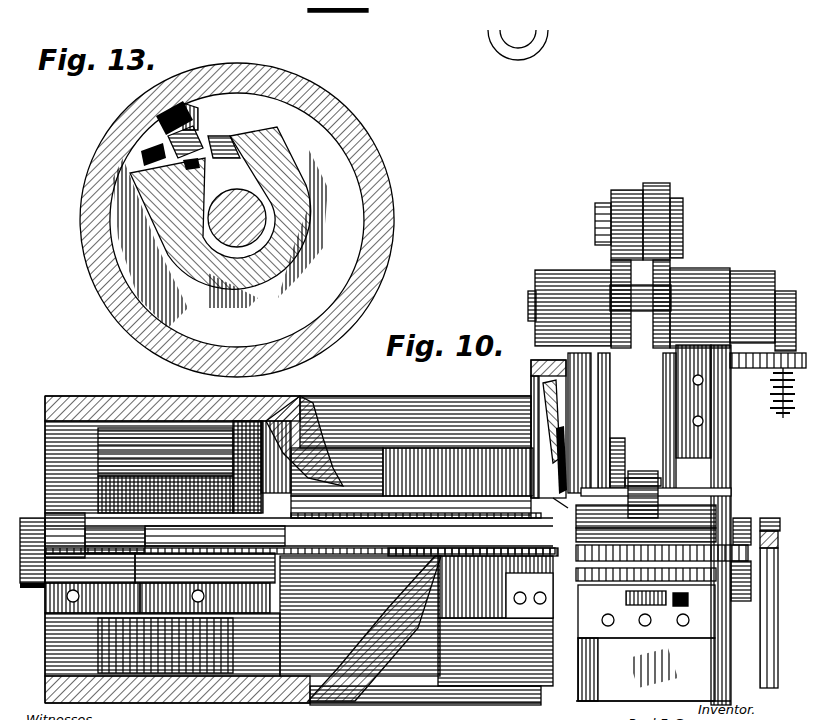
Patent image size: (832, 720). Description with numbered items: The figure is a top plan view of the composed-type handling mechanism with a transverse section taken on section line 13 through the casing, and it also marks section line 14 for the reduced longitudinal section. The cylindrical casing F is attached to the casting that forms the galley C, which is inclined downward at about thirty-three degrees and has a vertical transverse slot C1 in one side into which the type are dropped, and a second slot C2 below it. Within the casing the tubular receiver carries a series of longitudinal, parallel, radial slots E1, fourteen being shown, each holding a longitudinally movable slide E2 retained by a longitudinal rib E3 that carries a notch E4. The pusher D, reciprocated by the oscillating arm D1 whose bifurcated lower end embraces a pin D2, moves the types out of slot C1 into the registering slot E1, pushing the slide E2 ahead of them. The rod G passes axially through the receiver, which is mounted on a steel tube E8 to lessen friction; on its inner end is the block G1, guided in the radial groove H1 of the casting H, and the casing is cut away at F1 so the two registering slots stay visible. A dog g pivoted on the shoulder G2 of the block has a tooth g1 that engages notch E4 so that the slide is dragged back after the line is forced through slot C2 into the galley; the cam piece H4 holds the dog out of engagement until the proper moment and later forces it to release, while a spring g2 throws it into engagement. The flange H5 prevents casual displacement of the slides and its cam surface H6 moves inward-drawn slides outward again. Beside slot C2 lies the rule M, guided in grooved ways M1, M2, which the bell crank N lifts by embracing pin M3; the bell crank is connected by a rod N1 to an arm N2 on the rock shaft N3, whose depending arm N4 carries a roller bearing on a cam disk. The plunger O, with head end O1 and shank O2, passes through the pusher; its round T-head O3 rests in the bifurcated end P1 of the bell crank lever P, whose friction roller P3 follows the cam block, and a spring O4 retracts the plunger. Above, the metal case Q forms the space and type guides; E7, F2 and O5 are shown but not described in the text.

In FIG. 13, the cylindrical casing F is at (375, 200).
In FIG. 10, the cylindrical casing F is at (293, 540).
In FIG. 13, the casting H is at (224, 238).
In FIG. 10, the casting H is at (153, 467).
In FIG. 13, the radial groove H1 is at (265, 152).
In FIG. 10, the radial groove H1 is at (180, 490).
In FIG. 13, the rod G is at (237, 210).
In FIG. 13, the block G1 is at (225, 140).
In FIG. 10, the block G1 is at (52, 538).
In FIG. 13, the shoulder G2 is at (194, 172).
In FIG. 10, the shoulder G2 is at (37, 582).
In FIG. 13, the dog g is at (190, 150).
In FIG. 10, the dog g is at (114, 540).
In FIG. 10, the tooth g1 is at (195, 551).
In FIG. 13, the spring g2 is at (150, 128).
In FIG. 10, the spring g2 is at (90, 556).
In FIG. 13, the cam piece H4 is at (133, 150).
In FIG. 10, the cam piece H4 is at (104, 598).
In FIG. 10, the flange H5 is at (162, 644).
In FIG. 10, the cam surface H6 is at (195, 588).
In FIG. 13, the section line 13— 13 is at (193, 708).
In FIG. 13, the section line 14— 14 is at (175, 110).
In FIG. 10, the slots E1 is at (352, 505).
In FIG. 10, the slide E2 is at (262, 410).
In FIG. 10, the longitudinal rib E3 is at (248, 457).
In FIG. 10, the notch E4 is at (330, 548).
In FIG. 10, the spring E7 is at (215, 536).
In FIG. 10, the steel tube E8 is at (300, 538).
In FIG. 10, the cut-away F1 is at (422, 533).
In FIG. 10, the casing cylinder F2 is at (355, 600).
In FIG. 10, the metal case Q is at (525, 380).
In FIG. 10, the plunger O is at (637, 423).
In FIG. 10, the head end O1 is at (745, 600).
In FIG. 10, the shank O2 is at (622, 463).
In FIG. 10, the round T-head O3 is at (545, 465).
In FIG. 10, the spring O4 is at (570, 400).
In FIG. 10, the pawl O5 is at (540, 420).
In FIG. 10, the bell crank lever P is at (598, 340).
In FIG. 10, the bifurcated end P1 is at (672, 262).
In FIG. 10, the friction roller P3 is at (662, 185).
In FIG. 10, the bell crank N is at (770, 612).
In FIG. 10, the rod N1 is at (770, 415).
In FIG. 10, the arm N2 is at (745, 290).
In FIG. 10, the rock shaft N3 is at (775, 292).
In FIG. 10, the depending arm N4 is at (613, 525).
In FIG. 10, the pusher D is at (656, 475).
In FIG. 10, the oscillating arm D1 is at (643, 486).
In FIG. 10, the pin D2 is at (646, 516).
In FIG. 10, the galley C is at (653, 669).
In FIG. 10, the vertical transverse slot C1 is at (544, 509).
In FIG. 10, the second slot C2 is at (555, 532).
In FIG. 10, the rule M is at (646, 603).
In FIG. 10, the grooved way M1 is at (529, 588).
In FIG. 10, the grooved way M2 is at (735, 563).
In FIG. 10, the pin M3 is at (770, 515).